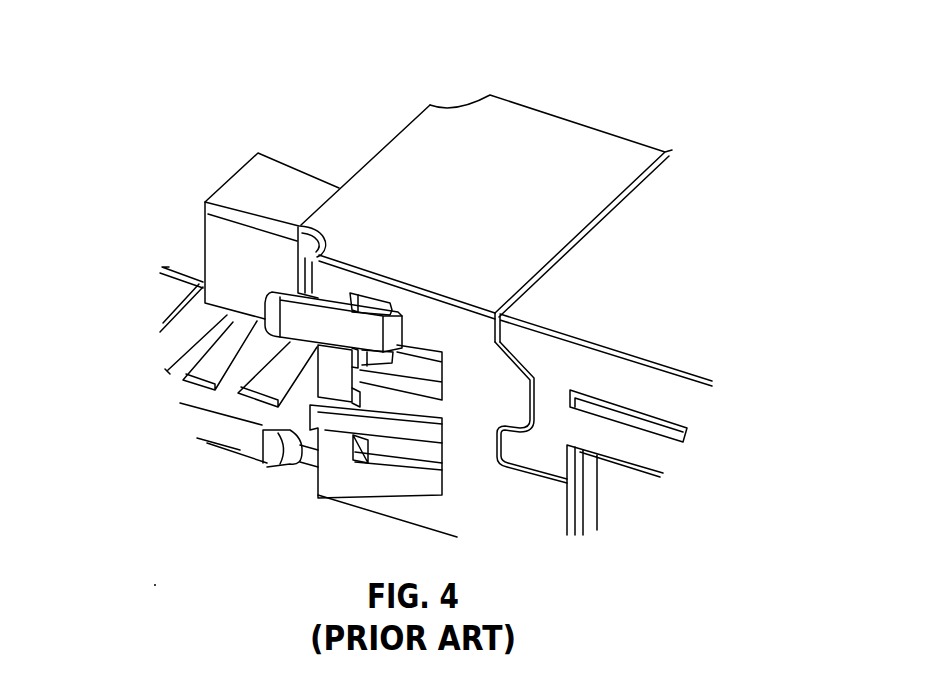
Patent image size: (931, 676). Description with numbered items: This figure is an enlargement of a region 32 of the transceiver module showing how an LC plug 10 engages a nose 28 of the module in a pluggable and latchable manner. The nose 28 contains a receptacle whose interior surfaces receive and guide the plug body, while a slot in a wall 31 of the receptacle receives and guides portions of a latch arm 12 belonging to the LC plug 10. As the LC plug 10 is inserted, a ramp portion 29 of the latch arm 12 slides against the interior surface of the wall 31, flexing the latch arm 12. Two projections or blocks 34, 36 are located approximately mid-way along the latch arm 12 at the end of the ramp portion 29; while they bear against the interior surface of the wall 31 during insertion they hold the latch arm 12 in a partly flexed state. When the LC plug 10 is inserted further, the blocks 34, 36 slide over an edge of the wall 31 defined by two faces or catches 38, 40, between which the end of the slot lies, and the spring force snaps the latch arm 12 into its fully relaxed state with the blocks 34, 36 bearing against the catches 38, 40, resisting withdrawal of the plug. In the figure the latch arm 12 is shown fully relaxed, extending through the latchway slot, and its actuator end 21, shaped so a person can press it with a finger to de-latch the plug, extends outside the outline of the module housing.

The LC plug 10 is at (284, 164).
The latch arm 12 is at (295, 343).
The actuator end 21 is at (272, 315).
The nose 28 is at (530, 108).
The ramp portion 29 is at (393, 303).
The wall 31 is at (327, 273).
The region 32 is at (690, 93).
The block 34 is at (373, 304).
The block 36 is at (368, 357).
The catch 38 is at (363, 301).
The catch 40 is at (360, 357).